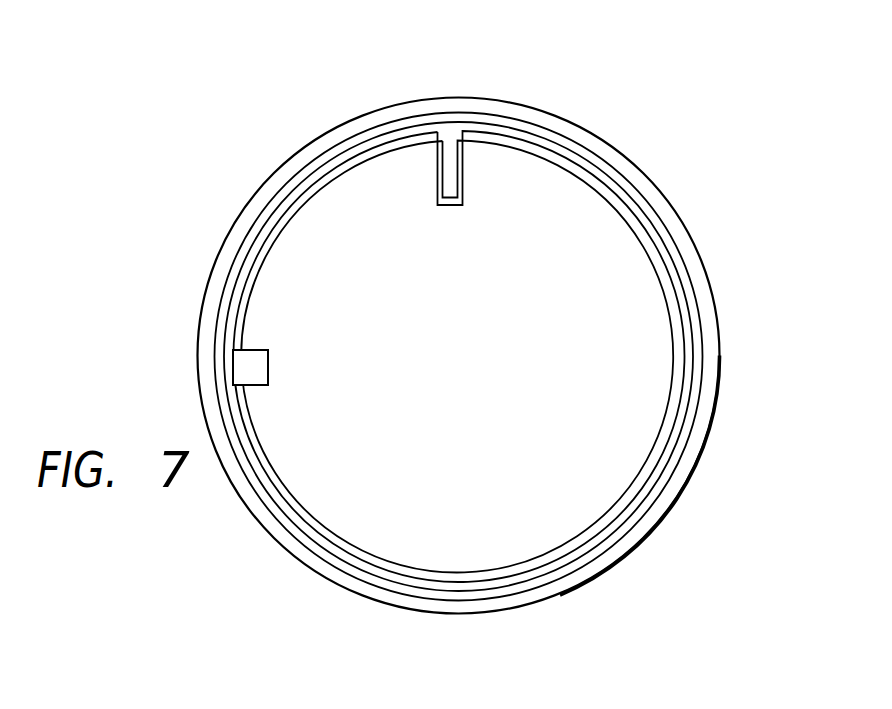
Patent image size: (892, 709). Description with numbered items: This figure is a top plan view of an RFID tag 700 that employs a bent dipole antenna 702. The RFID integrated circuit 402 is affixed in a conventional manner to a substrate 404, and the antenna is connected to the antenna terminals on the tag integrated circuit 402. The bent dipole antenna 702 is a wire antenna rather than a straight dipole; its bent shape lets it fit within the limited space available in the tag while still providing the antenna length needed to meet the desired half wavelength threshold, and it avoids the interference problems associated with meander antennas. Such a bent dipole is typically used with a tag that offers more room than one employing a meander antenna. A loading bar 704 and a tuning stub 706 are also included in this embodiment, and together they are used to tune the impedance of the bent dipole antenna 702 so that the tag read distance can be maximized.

The RFID tag 700 is at (224, 128).
The substrate 404 is at (601, 140).
The loading bar 704 is at (245, 248).
The bent dipole antenna 702 is at (257, 262).
The tuning stub 706 is at (463, 173).
The RFID integrated circuit 402 is at (268, 367).